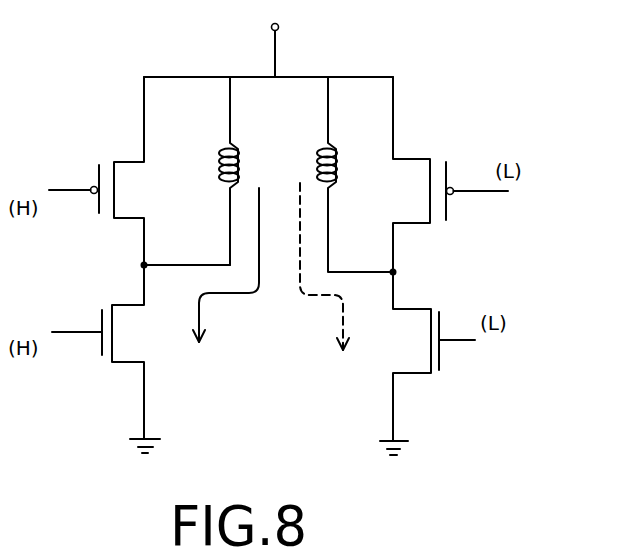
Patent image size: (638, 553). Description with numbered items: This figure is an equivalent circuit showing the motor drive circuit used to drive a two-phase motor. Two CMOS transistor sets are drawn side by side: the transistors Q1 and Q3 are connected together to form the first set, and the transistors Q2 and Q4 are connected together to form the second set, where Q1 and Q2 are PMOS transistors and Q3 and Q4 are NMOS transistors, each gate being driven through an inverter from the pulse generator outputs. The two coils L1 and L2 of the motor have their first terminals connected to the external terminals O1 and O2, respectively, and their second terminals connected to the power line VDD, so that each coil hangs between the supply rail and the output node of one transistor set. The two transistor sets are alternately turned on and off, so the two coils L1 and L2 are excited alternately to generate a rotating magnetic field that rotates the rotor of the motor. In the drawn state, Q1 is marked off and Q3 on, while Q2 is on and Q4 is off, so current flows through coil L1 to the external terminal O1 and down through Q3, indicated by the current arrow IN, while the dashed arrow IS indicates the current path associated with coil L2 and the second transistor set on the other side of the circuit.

The power line VDD is at (297, 43).
The PMOS transistor Q1 is at (105, 171).
The PMOS transistor Q2 is at (446, 174).
The NMOS transistor Q3 is at (106, 359).
The NMOS transistor Q4 is at (427, 363).
The coil L1 is at (214, 171).
The coil L2 is at (341, 174).
The external terminal O1 is at (166, 264).
The external terminal O2 is at (411, 268).
The current IN through Q3 path IN is at (226, 265).
The current IS through L2 path IS is at (323, 266).